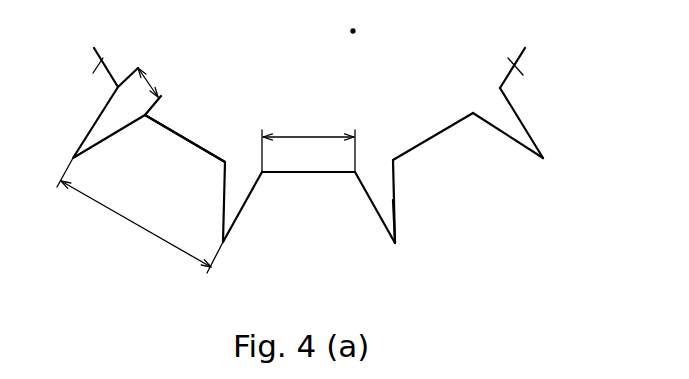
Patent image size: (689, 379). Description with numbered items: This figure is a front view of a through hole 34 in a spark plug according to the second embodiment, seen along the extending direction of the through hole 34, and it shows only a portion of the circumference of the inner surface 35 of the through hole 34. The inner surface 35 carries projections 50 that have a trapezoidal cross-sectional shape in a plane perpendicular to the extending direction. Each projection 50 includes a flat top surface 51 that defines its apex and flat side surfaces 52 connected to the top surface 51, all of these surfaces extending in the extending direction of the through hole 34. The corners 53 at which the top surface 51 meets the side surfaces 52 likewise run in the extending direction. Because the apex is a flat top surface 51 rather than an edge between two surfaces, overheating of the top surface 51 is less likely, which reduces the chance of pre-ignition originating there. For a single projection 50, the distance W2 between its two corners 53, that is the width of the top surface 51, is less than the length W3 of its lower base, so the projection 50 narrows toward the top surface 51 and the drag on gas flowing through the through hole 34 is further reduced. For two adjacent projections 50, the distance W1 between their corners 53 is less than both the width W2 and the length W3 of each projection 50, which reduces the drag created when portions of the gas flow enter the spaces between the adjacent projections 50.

The through hole 34 is at (354, 30).
The inner surface 35 is at (395, 240).
The projection 50 is at (100, 64).
The top surface 51 is at (408, 152).
The side surface 52 is at (393, 183).
The corner 53 is at (472, 110).
The distance between corners of adjacent projections W1 is at (150, 80).
The distance between corners of a projection W2 is at (308, 135).
The length of the lower base of the projection W3 is at (132, 223).